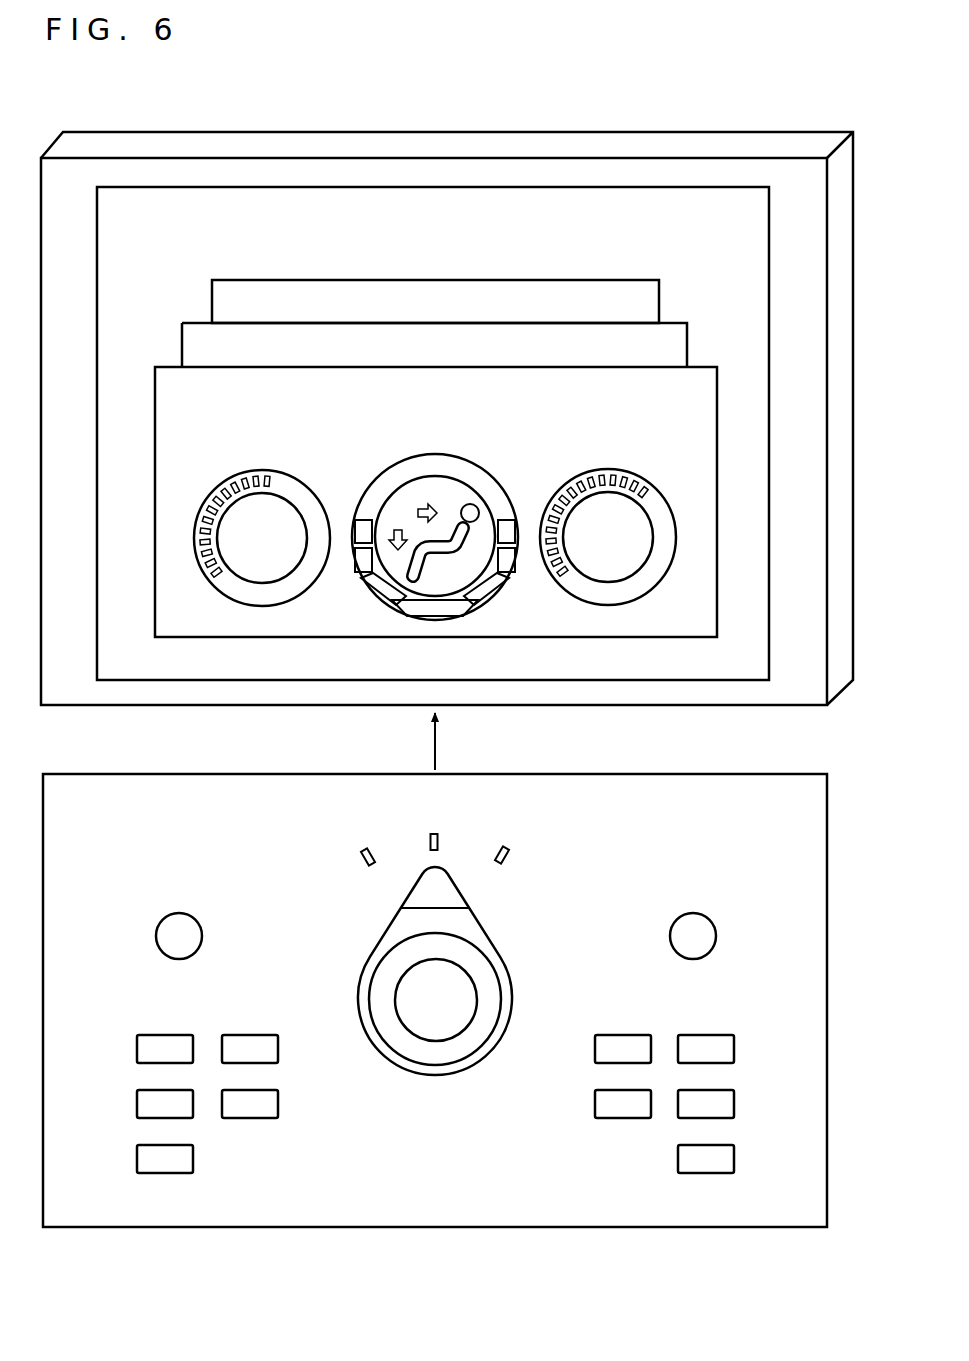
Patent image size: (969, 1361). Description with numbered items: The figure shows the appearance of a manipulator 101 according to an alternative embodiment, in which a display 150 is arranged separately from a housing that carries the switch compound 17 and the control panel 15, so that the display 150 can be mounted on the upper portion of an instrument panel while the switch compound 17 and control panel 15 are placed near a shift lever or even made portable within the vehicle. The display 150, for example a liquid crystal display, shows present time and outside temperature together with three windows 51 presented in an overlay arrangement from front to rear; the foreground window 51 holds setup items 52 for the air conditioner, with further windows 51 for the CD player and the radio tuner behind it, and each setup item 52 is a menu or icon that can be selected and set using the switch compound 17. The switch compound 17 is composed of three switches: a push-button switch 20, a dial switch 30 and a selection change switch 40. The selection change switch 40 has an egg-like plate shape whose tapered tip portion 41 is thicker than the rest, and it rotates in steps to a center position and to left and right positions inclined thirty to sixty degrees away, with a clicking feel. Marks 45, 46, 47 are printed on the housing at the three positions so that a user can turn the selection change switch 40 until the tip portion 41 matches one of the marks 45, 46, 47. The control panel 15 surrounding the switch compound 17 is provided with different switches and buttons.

The manipulator 101 is at (355, 120).
The display 150 is at (522, 172).
The window 51 is at (197, 323).
The setup item 52 is at (268, 470).
The control panel 15 is at (648, 1168).
The switch compound 17 is at (414, 999).
The push-button switch 20 is at (466, 992).
The dial switch 30 is at (421, 1048).
The selection change switch 40 is at (470, 926).
The tip portion 41 is at (457, 893).
The mark 45 is at (358, 848).
The mark 46 is at (433, 832).
The mark 47 is at (512, 848).